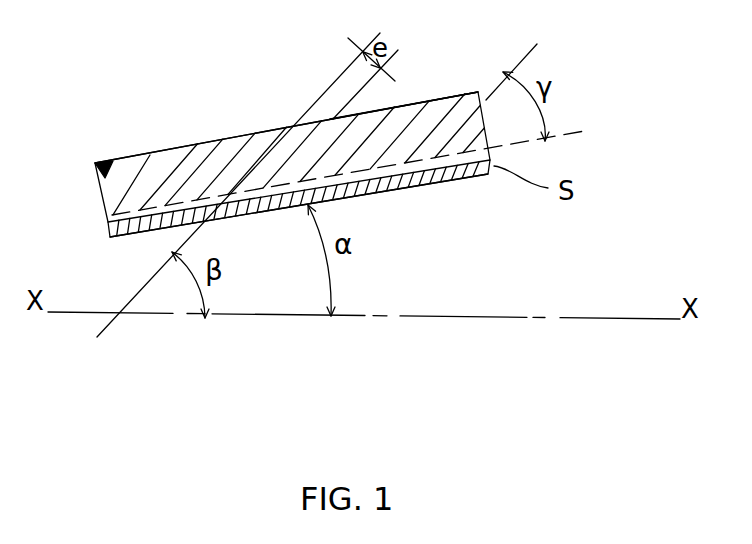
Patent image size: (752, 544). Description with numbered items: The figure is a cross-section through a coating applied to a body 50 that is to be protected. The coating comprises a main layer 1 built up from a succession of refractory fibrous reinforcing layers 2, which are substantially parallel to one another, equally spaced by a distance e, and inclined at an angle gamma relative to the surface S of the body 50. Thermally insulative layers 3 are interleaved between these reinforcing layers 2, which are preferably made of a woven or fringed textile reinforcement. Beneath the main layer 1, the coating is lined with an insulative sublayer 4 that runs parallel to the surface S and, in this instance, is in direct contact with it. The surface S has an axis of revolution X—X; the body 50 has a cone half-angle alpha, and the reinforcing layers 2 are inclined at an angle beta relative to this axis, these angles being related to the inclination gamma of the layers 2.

The main layer 1 is at (100, 183).
The refractory fibrous reinforcing layers 2 is at (320, 130).
The thermally insulative layers 3 is at (387, 107).
The insulative sublayer 4 is at (108, 236).
The body to be protected 50 is at (427, 184).